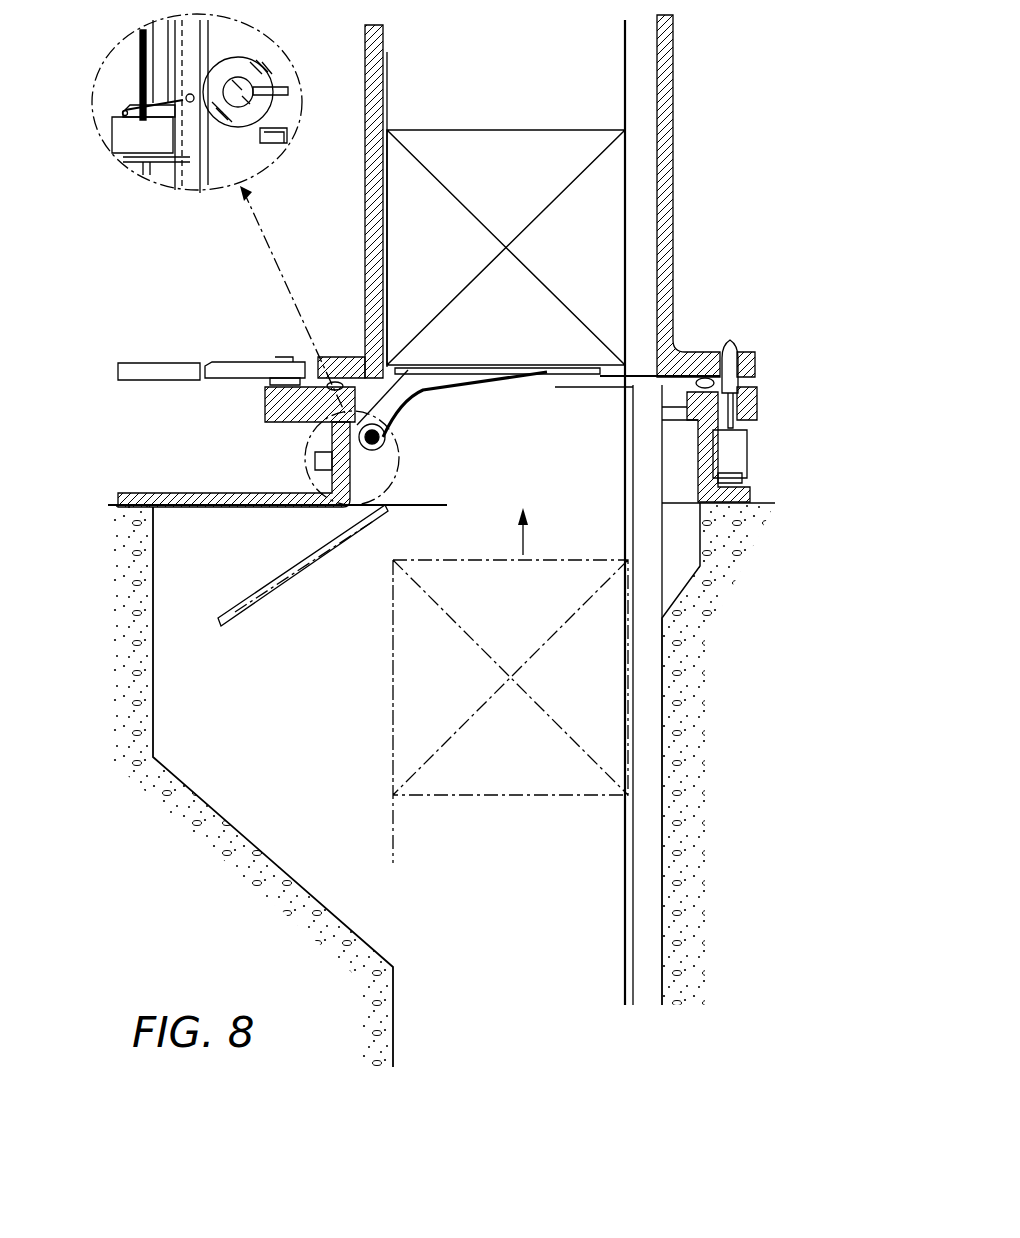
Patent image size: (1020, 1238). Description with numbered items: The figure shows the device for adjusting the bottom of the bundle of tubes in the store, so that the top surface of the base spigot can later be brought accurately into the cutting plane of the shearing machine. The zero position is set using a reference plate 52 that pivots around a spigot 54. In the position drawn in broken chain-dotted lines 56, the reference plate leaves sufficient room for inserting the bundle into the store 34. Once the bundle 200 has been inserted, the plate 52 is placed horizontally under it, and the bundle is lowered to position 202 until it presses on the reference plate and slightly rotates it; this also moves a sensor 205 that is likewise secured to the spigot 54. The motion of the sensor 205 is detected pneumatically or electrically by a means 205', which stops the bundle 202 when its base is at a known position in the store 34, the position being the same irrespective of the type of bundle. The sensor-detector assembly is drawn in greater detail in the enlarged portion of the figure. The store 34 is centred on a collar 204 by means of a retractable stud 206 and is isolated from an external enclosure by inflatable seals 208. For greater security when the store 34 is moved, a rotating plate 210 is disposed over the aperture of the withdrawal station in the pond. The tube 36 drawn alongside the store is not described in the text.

The bundle 200 is at (393, 828).
The inner tube 36 is at (630, 95).
The store 34 is at (665, 107).
The retractable stud 206 is at (726, 345).
The lowered position of bundle 202 is at (387, 172).
The inflatable seals 208 is at (335, 382).
The rotating plate 210 is at (153, 372).
The collar 204 is at (280, 400).
The sensor 205 is at (261, 253).
The detecting means 205' is at (151, 169).
The reference plate 52 is at (528, 373).
The spigot 54 is at (388, 450).
The retracted position of reference plate 56 is at (243, 612).